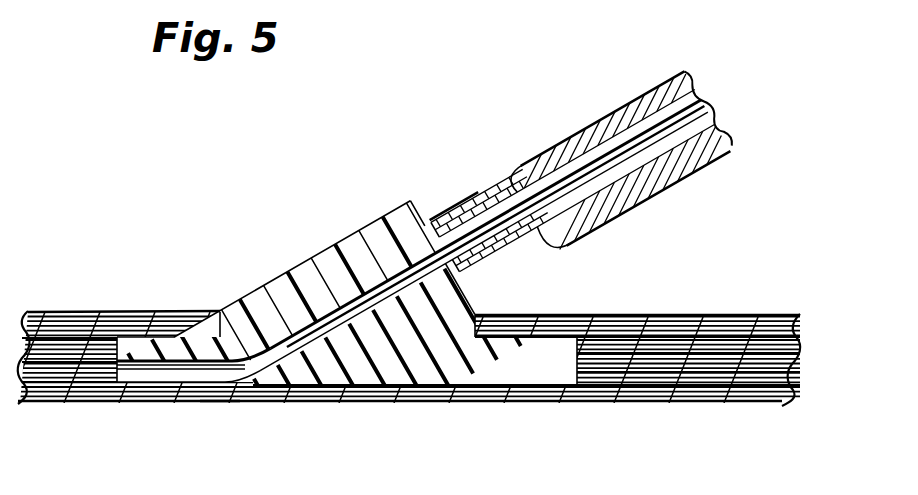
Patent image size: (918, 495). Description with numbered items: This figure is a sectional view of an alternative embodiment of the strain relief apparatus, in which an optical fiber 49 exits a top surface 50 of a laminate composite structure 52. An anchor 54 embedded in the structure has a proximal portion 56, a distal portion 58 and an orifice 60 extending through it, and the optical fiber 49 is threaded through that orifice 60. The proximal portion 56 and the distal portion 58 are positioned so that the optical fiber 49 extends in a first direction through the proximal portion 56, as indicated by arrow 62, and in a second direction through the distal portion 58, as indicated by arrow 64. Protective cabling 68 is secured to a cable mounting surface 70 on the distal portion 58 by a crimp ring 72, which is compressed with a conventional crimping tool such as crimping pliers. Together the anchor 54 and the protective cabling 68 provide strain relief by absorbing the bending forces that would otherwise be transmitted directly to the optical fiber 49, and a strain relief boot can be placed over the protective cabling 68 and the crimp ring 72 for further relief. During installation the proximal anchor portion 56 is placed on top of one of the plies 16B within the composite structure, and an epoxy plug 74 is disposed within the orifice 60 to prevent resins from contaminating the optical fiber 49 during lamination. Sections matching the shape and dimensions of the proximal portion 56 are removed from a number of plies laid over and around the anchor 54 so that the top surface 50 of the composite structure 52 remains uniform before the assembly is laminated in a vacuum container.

The ply 16B is at (790, 337).
The optical fiber 49 is at (99, 313).
The top surface 50 is at (735, 314).
The laminate composite structure 52 is at (672, 302).
The anchor 54 is at (268, 258).
The proximal portion 56 is at (178, 312).
The distal portion 58 is at (353, 235).
The orifice 60 is at (320, 268).
The arrow 62 is at (164, 412).
The arrow 64 is at (350, 420).
The protective cabling 68 is at (600, 110).
The cable mounting surface 70 is at (432, 232).
The crimp ring 72 is at (472, 196).
The epoxy plug 74 is at (214, 399).